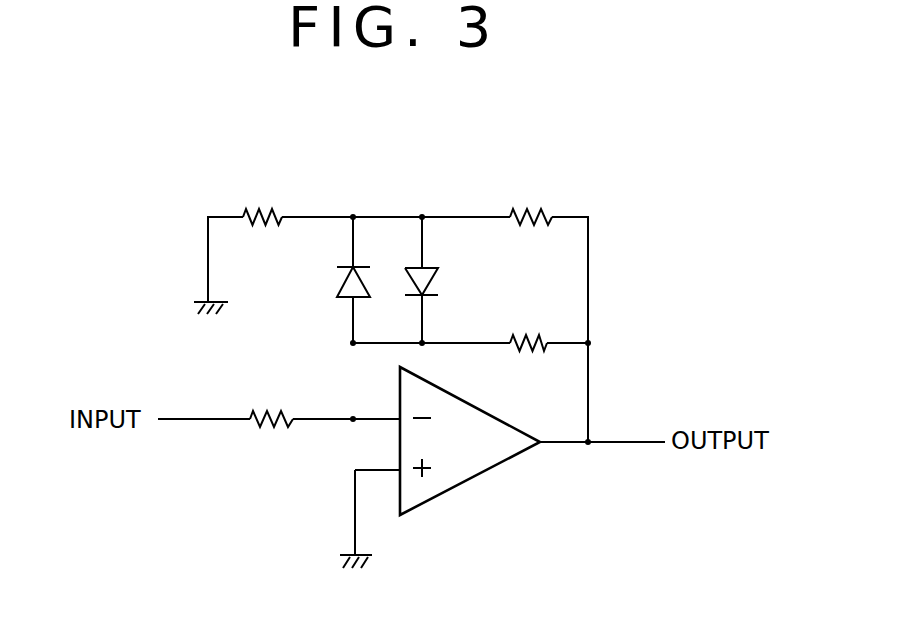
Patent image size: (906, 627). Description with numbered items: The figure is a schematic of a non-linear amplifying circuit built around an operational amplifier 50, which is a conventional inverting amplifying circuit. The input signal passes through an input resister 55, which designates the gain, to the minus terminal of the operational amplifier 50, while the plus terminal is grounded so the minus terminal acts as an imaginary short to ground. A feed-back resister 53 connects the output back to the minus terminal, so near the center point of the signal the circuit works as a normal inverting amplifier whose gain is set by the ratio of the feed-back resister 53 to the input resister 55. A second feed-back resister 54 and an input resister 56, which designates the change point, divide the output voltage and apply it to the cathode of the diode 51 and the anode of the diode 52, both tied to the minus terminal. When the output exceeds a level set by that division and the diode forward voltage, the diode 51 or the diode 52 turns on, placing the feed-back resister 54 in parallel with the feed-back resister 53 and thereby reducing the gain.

The operational amplifier 50 is at (485, 458).
The diode 51 is at (350, 290).
The diode 52 is at (409, 269).
The feed-back resister 53 is at (530, 358).
The feed-back resister 54 is at (563, 205).
The input resister 55 is at (273, 432).
The input resister 56 is at (295, 205).